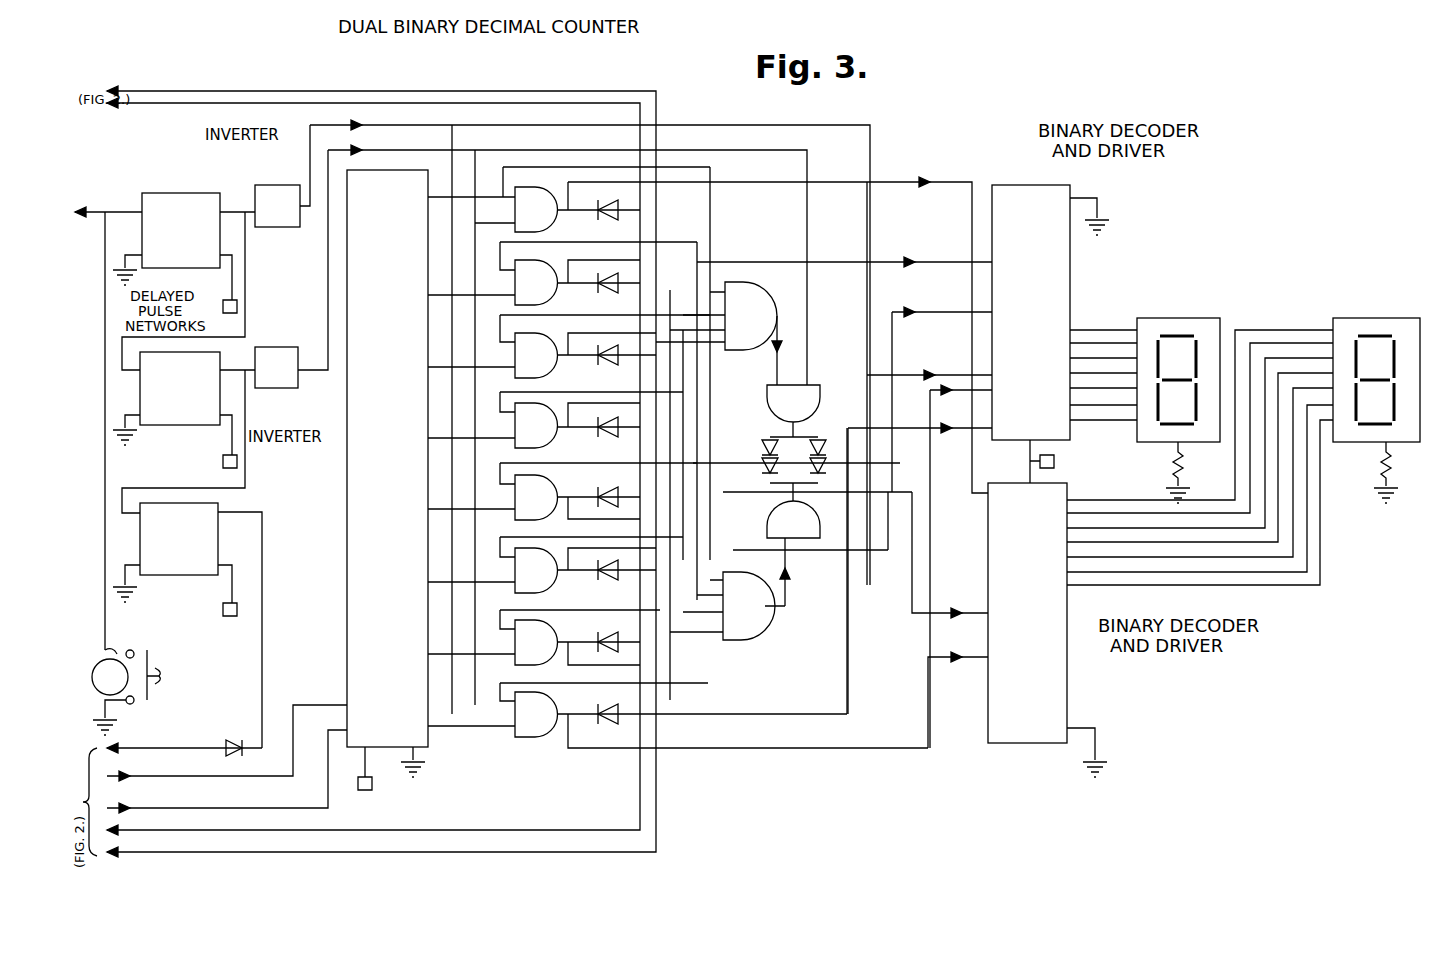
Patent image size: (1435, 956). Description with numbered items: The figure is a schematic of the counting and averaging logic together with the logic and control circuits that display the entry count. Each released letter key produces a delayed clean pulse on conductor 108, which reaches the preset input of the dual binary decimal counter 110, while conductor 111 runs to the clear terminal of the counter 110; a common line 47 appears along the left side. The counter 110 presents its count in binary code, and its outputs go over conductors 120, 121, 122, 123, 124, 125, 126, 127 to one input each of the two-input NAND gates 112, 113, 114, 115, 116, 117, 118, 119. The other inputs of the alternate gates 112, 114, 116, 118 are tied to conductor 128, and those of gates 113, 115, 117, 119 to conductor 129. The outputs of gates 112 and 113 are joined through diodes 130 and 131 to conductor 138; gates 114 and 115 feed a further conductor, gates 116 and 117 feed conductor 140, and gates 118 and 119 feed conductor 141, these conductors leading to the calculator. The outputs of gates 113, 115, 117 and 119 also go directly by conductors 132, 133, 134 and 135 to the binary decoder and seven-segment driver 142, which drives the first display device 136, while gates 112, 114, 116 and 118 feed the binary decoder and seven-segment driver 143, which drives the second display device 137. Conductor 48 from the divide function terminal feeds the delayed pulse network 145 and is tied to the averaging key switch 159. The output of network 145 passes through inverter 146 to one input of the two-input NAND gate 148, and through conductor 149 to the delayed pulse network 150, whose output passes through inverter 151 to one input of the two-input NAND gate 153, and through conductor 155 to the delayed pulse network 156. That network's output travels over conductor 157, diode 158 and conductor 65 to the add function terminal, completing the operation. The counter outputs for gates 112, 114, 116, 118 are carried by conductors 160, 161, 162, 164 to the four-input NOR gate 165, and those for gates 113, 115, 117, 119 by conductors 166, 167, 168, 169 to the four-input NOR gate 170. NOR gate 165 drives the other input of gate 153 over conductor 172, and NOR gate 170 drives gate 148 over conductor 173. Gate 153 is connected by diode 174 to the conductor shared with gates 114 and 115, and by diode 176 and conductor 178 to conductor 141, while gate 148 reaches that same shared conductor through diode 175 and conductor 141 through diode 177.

The common bus line 47 is at (104, 454).
The conductor 48 is at (91, 210).
The conductor 65 is at (179, 748).
The conductor 108 is at (232, 776).
The dual binary decimal counter 110 is at (358, 530).
The conductor 111 is at (303, 808).
The two-input NAND gate 112 is at (534, 199).
The two-input NAND gate 113 is at (534, 273).
The two-input NAND gate 114 is at (542, 346).
The two-input NAND gate 115 is at (534, 420).
The two-input NAND gate 116 is at (534, 491).
The two-input NAND gate 117 is at (542, 565).
The two-input NAND gate 118 is at (534, 637).
The two-input NAND gate 119 is at (678, 715).
The conductor 120 is at (490, 196).
The conductor 121 is at (502, 284).
The conductor 122 is at (514, 342).
The conductor 123 is at (488, 410).
The conductor 124 is at (492, 480).
The conductor 125 is at (492, 554).
The conductor 126 is at (492, 627).
The conductor 127 is at (515, 678).
The conductor 128 is at (472, 192).
The conductor 129 is at (446, 150).
The diode 130 is at (618, 207).
The diode 131 is at (608, 272).
The conductor 132 is at (940, 262).
The conductor 133 is at (825, 432).
The conductor 134 is at (824, 546).
The conductor 135 is at (860, 752).
The first display device 136 is at (1175, 318).
The second display device 137 is at (1384, 318).
The conductor 138 is at (580, 103).
The conductor 140 is at (580, 842).
The conductor 141 is at (516, 830).
The binary decoder and seven-segment driver 142 is at (1064, 292).
The binary decoder and seven-segment driver 143 is at (1056, 700).
The delayed pulse network 145 is at (168, 198).
The inverter 146 is at (278, 180).
The two-input NAND gate 148 is at (780, 518).
The conductor 149 is at (245, 300).
The delayed pulse network 150 is at (197, 415).
The inverter 151 is at (292, 352).
The two-input NAND gate 153 is at (780, 404).
The conductor 155 is at (249, 492).
The delayed pulse network 156 is at (196, 568).
The conductor 157 is at (262, 634).
The diode 158 is at (230, 740).
The averaging key switch 159 is at (130, 652).
The conductor 160 is at (710, 212).
The conductor 161 is at (678, 317).
The conductor 162 is at (646, 337).
The conductor 164 is at (614, 609).
The four-input NOR gate 165 is at (758, 300).
The conductor 166 is at (609, 242).
The conductor 167 is at (626, 392).
The conductor 168 is at (600, 535).
The conductor 169 is at (700, 686).
The four-input NOR gate 170 is at (766, 640).
The conductor 172 is at (782, 320).
The conductor 173 is at (786, 606).
The diode 174 is at (770, 442).
The diode 175 is at (770, 470).
The diode 176 is at (826, 454).
The diode 177 is at (826, 474).
The conductor 178 is at (776, 712).